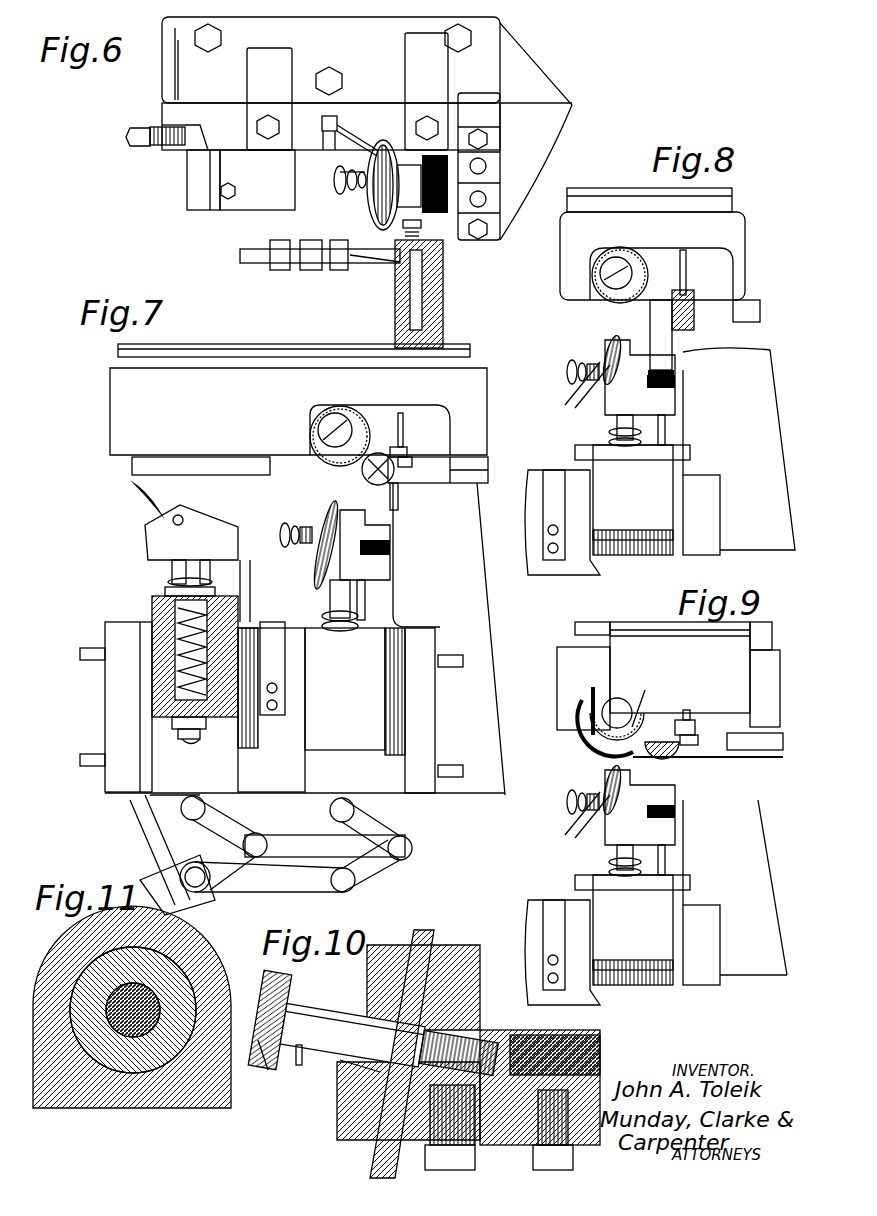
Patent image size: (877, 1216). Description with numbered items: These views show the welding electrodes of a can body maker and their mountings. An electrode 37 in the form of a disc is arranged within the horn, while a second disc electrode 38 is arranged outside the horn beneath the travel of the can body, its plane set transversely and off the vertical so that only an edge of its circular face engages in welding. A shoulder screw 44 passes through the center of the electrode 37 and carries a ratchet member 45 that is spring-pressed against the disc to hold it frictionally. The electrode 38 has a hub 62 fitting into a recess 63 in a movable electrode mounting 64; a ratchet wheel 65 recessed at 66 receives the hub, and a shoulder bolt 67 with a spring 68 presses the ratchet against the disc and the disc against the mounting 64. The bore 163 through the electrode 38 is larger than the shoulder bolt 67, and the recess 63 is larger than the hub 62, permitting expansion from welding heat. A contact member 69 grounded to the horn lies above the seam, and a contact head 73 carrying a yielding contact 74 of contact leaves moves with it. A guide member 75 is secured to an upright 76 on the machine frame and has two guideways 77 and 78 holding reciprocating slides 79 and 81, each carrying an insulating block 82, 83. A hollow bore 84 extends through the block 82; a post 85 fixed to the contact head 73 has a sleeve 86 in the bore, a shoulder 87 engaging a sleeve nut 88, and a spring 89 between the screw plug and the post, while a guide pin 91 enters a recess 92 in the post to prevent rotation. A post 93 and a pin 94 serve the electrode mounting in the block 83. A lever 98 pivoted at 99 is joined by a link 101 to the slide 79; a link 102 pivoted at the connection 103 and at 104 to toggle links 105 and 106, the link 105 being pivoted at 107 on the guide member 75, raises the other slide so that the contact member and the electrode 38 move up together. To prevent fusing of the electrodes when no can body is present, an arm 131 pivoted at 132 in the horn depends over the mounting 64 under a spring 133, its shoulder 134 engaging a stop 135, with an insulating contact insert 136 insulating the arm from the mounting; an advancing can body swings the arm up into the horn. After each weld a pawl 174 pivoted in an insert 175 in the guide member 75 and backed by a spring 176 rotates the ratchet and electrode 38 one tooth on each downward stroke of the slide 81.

In FIG. 7, the electrode 37 is at (375, 432).
In FIG. 8, the electrode 37 is at (595, 300).
In FIG. 9, the electrode 37 is at (598, 742).
In FIG. 6, the electrode 38 is at (380, 221).
In FIG. 7, the electrode 38 is at (333, 503).
In FIG. 8, the electrode 38 is at (608, 345).
In FIG. 9, the electrode 38 is at (617, 783).
In FIG. 10, the electrode 38 is at (432, 928).
In FIG. 8, the shoulder screw 44 is at (630, 262).
In FIG. 9, the shoulder screw 44 is at (618, 708).
In FIG. 8, the ratchet member 45 is at (665, 265).
In FIG. 9, the ratchet member 45 is at (649, 700).
In FIG. 10, the hub 62 is at (470, 985).
In FIG. 10, the recess 63 is at (432, 1010).
In FIG. 11, the recess 63 is at (95, 957).
In FIG. 10, the movable electrode mounting 64 is at (515, 1130).
In FIG. 8, the ratchet wheel 65 is at (575, 358).
In FIG. 10, the ratchet wheel 65 is at (352, 1085).
In FIG. 10, the recess 66 is at (386, 952).
In FIG. 6, the shoulder bolt 67 is at (350, 191).
In FIG. 7, the shoulder bolt 67 is at (284, 523).
In FIG. 8, the shoulder bolt 67 is at (570, 400).
In FIG. 10, the shoulder bolt 67 is at (262, 1072).
In FIG. 7, the spring 68 is at (305, 527).
In FIG. 10, the spring 68 is at (296, 1068).
In FIG. 7, the contact member 69 is at (150, 463).
In FIG. 6, the contact head 73 is at (258, 195).
In FIG. 7, the contact head 73 is at (178, 545).
In FIG. 6, the yielding contact 74 is at (200, 185).
In FIG. 7, the yielding contact 74 is at (137, 492).
In FIG. 7, the guide member 75 is at (122, 690).
In FIG. 7, the upright 76 is at (470, 592).
In FIG. 8, the upright 76 is at (768, 440).
In FIG. 9, the upright 76 is at (757, 832).
In FIG. 7, the guideway 77 is at (135, 792).
In FIG. 7, the guideway 78 is at (400, 770).
In FIG. 7, the slide 79 is at (165, 805).
In FIG. 7, the slide 81 is at (395, 825).
In FIG. 7, the block 82 is at (152, 625).
In FIG. 7, the block 83 is at (365, 652).
In FIG. 8, the block 83 is at (650, 472).
In FIG. 9, the block 83 is at (650, 902).
In FIG. 7, the bore 84 is at (178, 685).
In FIG. 7, the post 85 is at (170, 572).
In FIG. 7, the sleeve 86 is at (80, 655).
In FIG. 7, the shoulder 87 is at (165, 600).
In FIG. 7, the sleeve nut 88 is at (190, 590).
In FIG. 7, the spring 89 is at (250, 612).
In FIG. 7, the guide pin 91 is at (240, 560).
In FIG. 7, the recess 92 is at (265, 630).
In FIG. 7, the post 93 is at (345, 614).
In FIG. 7, the pin 94 is at (362, 630).
In FIG. 7, the lever 98 is at (225, 885).
In FIG. 7, the pivot 99 is at (197, 892).
In FIG. 7, the link 101 is at (215, 820).
In FIG. 7, the link 102 is at (312, 857).
In FIG. 7, the connection 103 is at (258, 857).
In FIG. 7, the pivot connection 104 is at (412, 846).
In FIG. 7, the toggle link 105 is at (370, 870).
In FIG. 7, the toggle link 106 is at (380, 822).
In FIG. 7, the pivot 107 is at (348, 890).
In FIG. 8, the arm 131 is at (672, 348).
In FIG. 7, the pivot 132 is at (340, 480).
In FIG. 8, the pivot 132 is at (694, 305).
In FIG. 9, the pivot 132 is at (683, 723).
In FIG. 7, the spring 133 is at (400, 483).
In FIG. 9, the spring 133 is at (750, 745).
In FIG. 7, the shoulder 134 is at (400, 447).
In FIG. 9, the shoulder 134 is at (660, 733).
In FIG. 7, the stop 135 is at (405, 455).
In FIG. 9, the stop 135 is at (700, 740).
In FIG. 6, the insulating contact insert 136 is at (500, 190).
In FIG. 7, the insulating contact insert 136 is at (375, 540).
In FIG. 8, the insulating contact insert 136 is at (690, 378).
In FIG. 9, the insulating contact insert 136 is at (677, 808).
In FIG. 10, the insulating contact insert 136 is at (598, 1045).
In FIG. 11, the bore 163 is at (130, 1035).
In FIG. 6, the pawl 174 is at (330, 140).
In FIG. 9, the pawl 174 is at (572, 830).
In FIG. 7, the insert 175 is at (345, 585).
In FIG. 8, the insert 175 is at (550, 480).
In FIG. 9, the insert 175 is at (550, 910).
In FIG. 6, the spring 176 is at (336, 115).